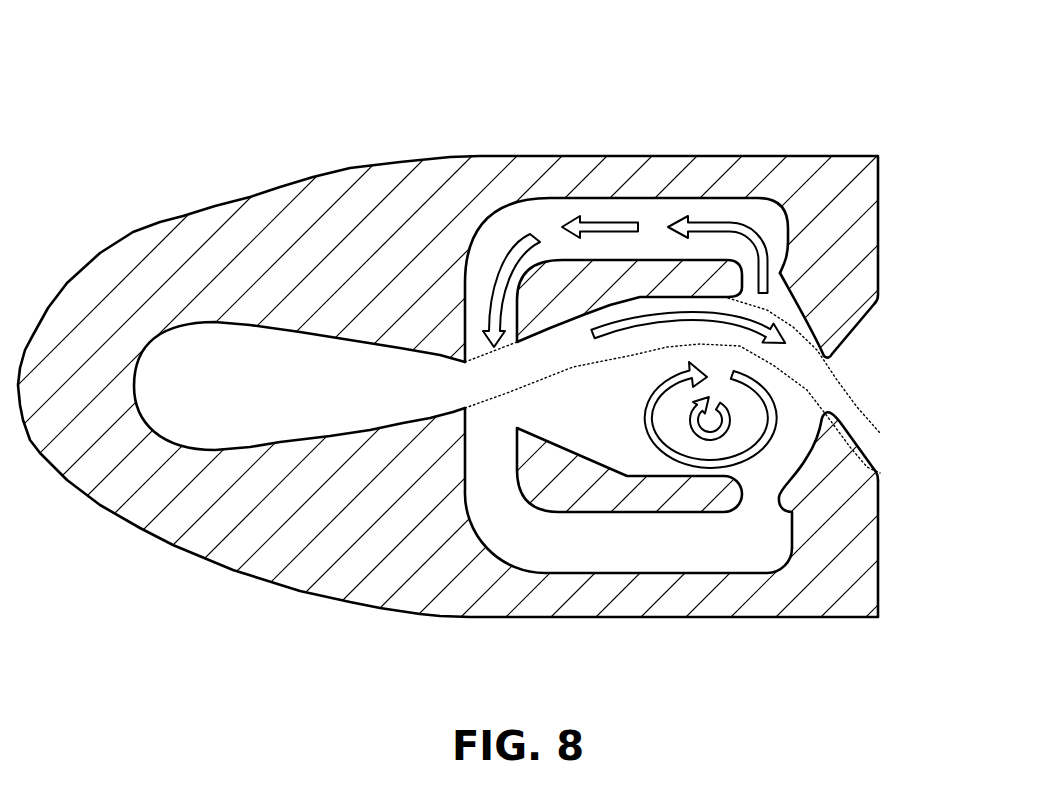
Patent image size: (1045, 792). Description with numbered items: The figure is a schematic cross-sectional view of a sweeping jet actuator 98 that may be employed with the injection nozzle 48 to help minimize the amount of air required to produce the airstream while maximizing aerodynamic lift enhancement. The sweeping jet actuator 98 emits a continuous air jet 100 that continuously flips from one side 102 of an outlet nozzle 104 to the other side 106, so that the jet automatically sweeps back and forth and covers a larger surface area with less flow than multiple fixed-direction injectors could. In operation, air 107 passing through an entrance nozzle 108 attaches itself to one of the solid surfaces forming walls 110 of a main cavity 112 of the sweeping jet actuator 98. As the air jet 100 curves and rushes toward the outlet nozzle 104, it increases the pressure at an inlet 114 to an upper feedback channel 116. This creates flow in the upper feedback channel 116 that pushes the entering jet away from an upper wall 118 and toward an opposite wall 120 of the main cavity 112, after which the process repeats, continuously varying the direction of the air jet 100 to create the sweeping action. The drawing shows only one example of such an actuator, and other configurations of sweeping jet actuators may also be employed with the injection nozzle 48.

The injection nozzle 48 is at (182, 218).
The sweeping jet actuator 98 is at (587, 156).
The air jet 100 is at (847, 377).
The one side of outlet nozzle 102 is at (866, 320).
The outlet nozzle 104 is at (864, 400).
The other side of outlet nozzle 106 is at (873, 462).
The air 107 is at (765, 327).
The entrance nozzle 108 is at (463, 380).
The walls 110 is at (553, 333).
The main cavity 112 is at (623, 445).
The inlet 114 is at (778, 268).
The upper feedback channel 116 is at (503, 247).
The upper wall 118 is at (542, 335).
The opposite wall 120 is at (541, 438).